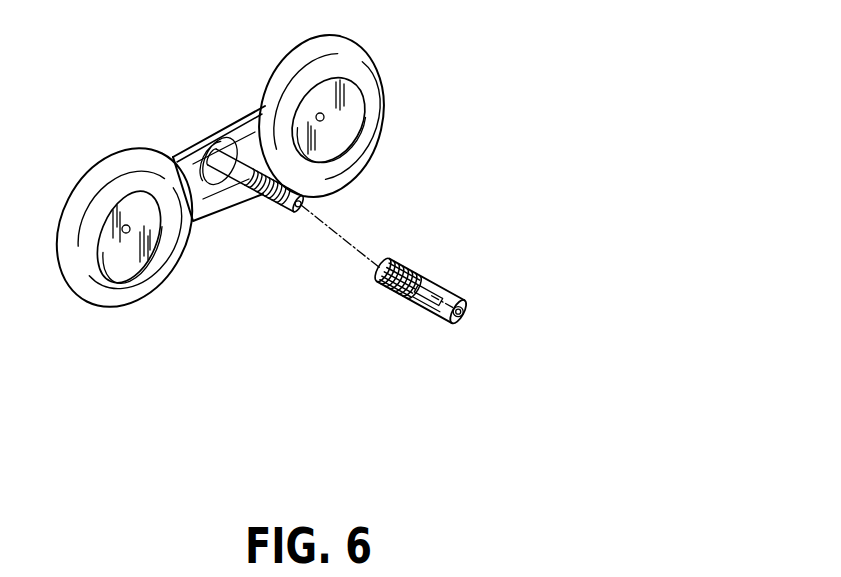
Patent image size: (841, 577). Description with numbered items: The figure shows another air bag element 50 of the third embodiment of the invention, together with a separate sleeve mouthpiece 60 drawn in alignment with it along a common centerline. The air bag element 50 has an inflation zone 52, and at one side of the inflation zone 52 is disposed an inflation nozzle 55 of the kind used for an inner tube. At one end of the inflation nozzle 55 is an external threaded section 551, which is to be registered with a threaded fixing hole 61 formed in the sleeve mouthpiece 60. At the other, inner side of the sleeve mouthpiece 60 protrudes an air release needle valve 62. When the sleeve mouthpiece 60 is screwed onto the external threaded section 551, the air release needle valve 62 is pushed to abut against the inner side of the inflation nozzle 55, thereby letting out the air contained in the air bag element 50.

The air bag element 50 is at (165, 87).
The inflation zone 52 is at (203, 225).
The inflation nozzle 55 is at (379, 198).
The external threaded section 551 is at (265, 213).
The sleeve mouthpiece 60 is at (446, 260).
The threaded fixing hole 61 is at (392, 290).
The air release needle valve 62 is at (461, 318).